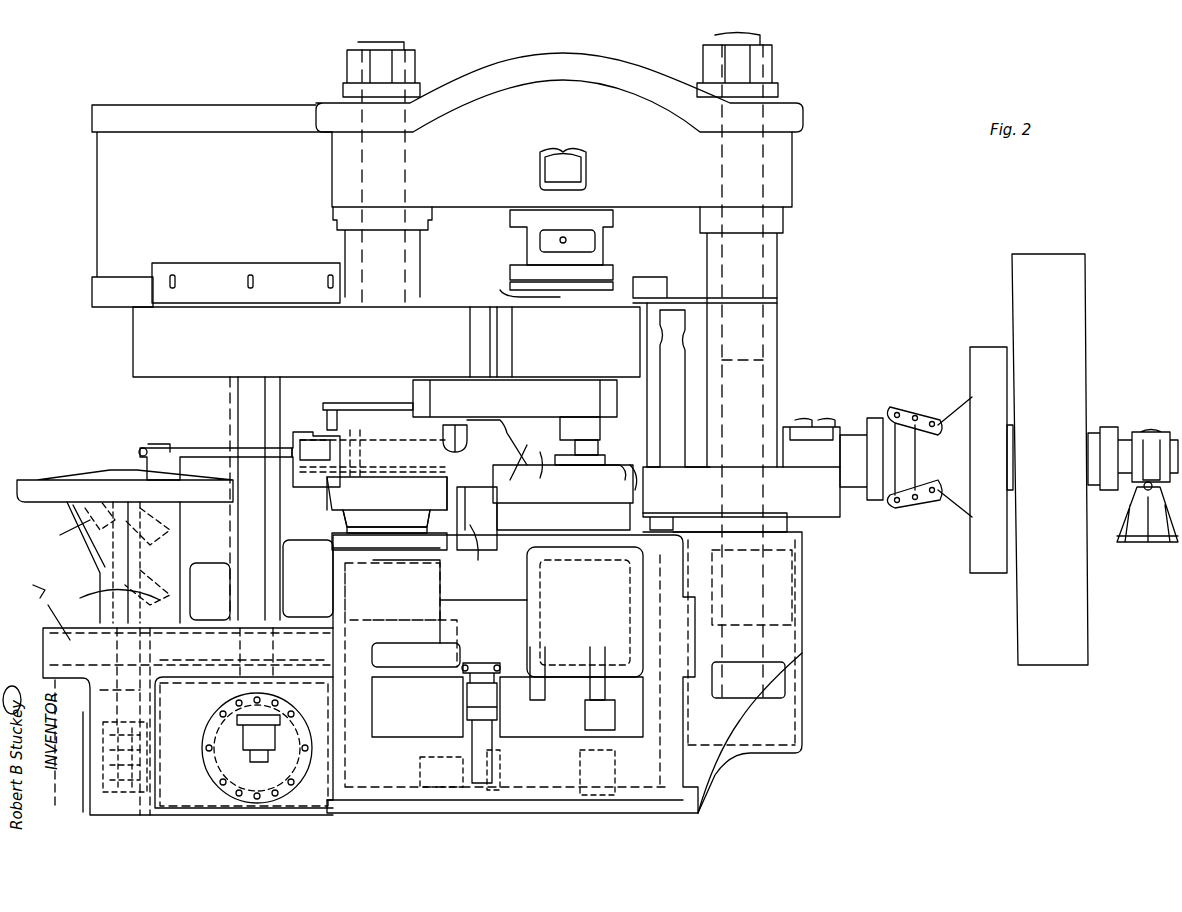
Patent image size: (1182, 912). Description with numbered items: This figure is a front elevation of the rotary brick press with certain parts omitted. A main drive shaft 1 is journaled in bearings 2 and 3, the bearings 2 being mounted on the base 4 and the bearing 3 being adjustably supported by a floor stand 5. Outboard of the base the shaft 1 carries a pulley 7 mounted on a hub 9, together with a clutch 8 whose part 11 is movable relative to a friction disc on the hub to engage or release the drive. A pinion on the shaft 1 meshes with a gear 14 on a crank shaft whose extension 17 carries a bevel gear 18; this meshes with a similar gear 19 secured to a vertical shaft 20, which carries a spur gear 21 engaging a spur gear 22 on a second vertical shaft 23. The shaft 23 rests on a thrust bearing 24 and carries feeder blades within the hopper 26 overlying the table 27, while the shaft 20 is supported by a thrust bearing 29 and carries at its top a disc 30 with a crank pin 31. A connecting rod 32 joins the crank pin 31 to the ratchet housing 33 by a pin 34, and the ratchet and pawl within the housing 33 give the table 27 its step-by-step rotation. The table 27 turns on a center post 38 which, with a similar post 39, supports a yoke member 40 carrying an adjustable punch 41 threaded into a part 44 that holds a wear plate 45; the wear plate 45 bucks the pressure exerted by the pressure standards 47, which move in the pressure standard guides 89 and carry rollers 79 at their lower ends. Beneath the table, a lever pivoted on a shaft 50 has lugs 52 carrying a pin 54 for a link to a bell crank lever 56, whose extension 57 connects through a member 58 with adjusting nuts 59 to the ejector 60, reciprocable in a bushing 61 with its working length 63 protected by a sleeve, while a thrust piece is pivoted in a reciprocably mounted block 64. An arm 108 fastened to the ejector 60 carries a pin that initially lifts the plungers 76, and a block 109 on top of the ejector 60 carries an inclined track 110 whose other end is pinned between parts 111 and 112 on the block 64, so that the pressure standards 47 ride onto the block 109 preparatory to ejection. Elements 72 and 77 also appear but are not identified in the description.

The main drive shaft 1 is at (853, 430).
The bearings 2 is at (803, 428).
The bearing 3 is at (1165, 428).
The base 4 is at (800, 600).
The floor stand 5 is at (1158, 548).
The pulley 7 is at (1070, 303).
The clutch 8 is at (905, 407).
The hub 9 is at (1010, 425).
The clutch part 11 is at (960, 387).
The gear 14 is at (770, 373).
The extension 17 is at (305, 560).
The bevel gear 18 is at (109, 593).
The bevel gear 19 is at (56, 535).
The vertical shaft 20 is at (110, 690).
The spur gear 21 is at (49, 612).
The spur gear 22 is at (215, 652).
The second vertical shaft 23 is at (255, 525).
The thrust bearing 24 is at (283, 760).
The hopper 26 is at (128, 220).
The table 27 is at (133, 355).
The thrust bearing 29 is at (147, 770).
The disc 30 is at (50, 465).
The crank pin 31 is at (152, 442).
The connecting rod 32 is at (205, 455).
The ratchet housing 33 is at (315, 470).
The pin 34 is at (320, 413).
The center post 38 is at (425, 305).
The post 39 is at (752, 40).
The yoke member 40 is at (559, 130).
The adjustable punch 41 is at (568, 240).
The part 44 is at (610, 284).
The wear plate 45 is at (517, 285).
The pressure standards 47 is at (590, 460).
The shaft 50 is at (560, 612).
The lugs 52 is at (590, 695).
The pin 54 is at (614, 718).
The bell crank lever 56 is at (590, 752).
The extension 57 is at (460, 752).
The member 58 is at (495, 727).
The axial adjusting nuts 59 is at (462, 672).
The ejector 60 is at (505, 520).
The bushing 61 is at (460, 655).
The working length 63 is at (477, 547).
The block 64 is at (593, 478).
The rod 72 is at (510, 335).
The plungers 76 is at (490, 320).
The sleeve 77 is at (576, 415).
The rollers 79 is at (598, 445).
The pressure standard guides 89 is at (540, 375).
The arm 108 is at (462, 480).
The block 109 is at (485, 442).
The track 110 is at (528, 466).
The part 111 is at (549, 476).
The part 112 is at (618, 484).